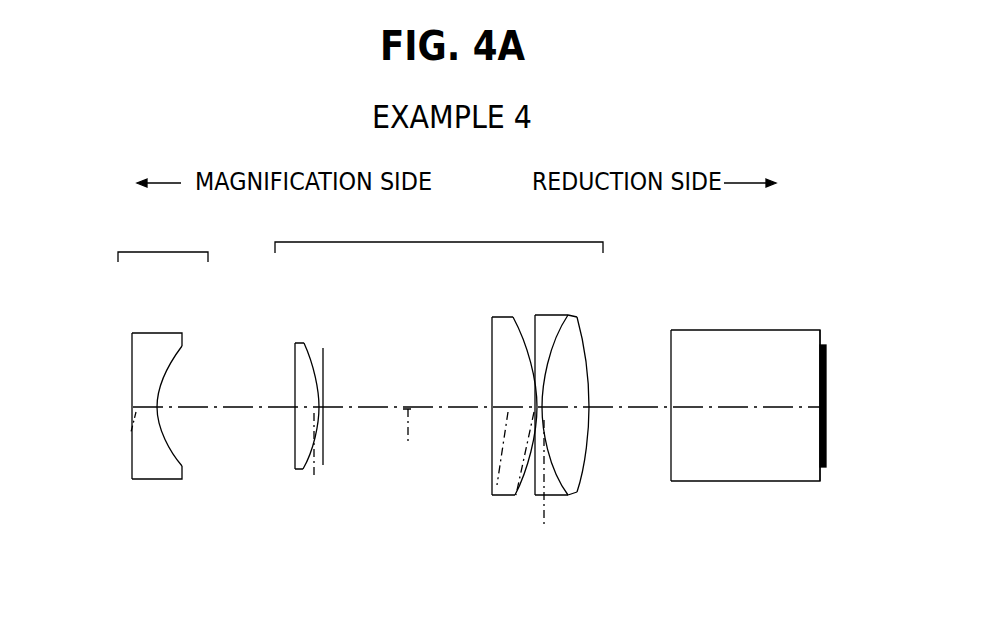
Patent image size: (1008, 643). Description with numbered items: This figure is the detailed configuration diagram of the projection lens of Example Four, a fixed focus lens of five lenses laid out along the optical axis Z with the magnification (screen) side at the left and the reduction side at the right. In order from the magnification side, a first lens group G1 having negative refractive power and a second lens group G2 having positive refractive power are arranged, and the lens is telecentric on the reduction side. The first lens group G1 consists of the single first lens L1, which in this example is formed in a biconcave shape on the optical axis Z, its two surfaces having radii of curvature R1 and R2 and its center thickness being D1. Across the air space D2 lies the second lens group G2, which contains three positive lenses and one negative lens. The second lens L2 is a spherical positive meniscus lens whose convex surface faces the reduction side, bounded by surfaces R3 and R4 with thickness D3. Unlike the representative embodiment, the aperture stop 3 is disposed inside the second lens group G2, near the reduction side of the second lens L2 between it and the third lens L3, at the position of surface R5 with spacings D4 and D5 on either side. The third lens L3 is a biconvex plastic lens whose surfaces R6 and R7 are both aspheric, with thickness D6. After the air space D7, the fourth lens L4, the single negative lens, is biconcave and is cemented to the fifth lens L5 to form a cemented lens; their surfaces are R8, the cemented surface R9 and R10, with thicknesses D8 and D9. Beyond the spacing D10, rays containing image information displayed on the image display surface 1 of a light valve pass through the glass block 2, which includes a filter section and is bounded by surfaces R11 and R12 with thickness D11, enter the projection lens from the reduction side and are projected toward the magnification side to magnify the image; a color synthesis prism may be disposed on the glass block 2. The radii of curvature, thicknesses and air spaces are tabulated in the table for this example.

The image display surface 1 is at (827, 453).
The glass block 2 is at (753, 416).
The aperture stop 3 is at (346, 398).
The optical axis Z is at (410, 445).
The first lens group G1 is at (163, 241).
The second lens group G2 is at (439, 233).
The first lens L1 is at (150, 428).
The second lens L2 is at (278, 420).
The third lens L3 is at (484, 403).
The fourth lens L4 is at (554, 404).
The fifth lens L5 is at (602, 407).
The radius of curvature of first lens surface R1 is at (134, 400).
The radius of curvature of second lens surface R2 is at (158, 407).
The radius of curvature of third lens surface R3 is at (296, 400).
The radius of curvature of fourth lens surface R4 is at (318, 394).
The radius of curvature of fifth surface R5 is at (323, 372).
The radius of curvature of sixth lens surface R6 is at (491, 384).
The radius of curvature of seventh lens surface R7 is at (533, 352).
The radius of curvature of eighth lens surface R8 is at (533, 348).
The radius of curvature of ninth lens surface R9 is at (552, 333).
The radius of curvature of tenth lens surface R10 is at (591, 385).
The radius of curvature of eleventh surface R11 is at (669, 404).
The radius of curvature of twelfth surface R12 is at (822, 340).
The center thickness of first lens D1 is at (124, 425).
The air space between first and second lenses D2 is at (210, 427).
The center thickness of second lens D3 is at (293, 425).
The air space between second lens and aperture stop D4 is at (327, 466).
The air space between aperture stop and third lens D5 is at (367, 424).
The center thickness of third lens D6 is at (497, 436).
The air space between third and fourth lenses D7 is at (520, 472).
The center thickness of fourth lens D8 is at (556, 490).
The center thickness of fifth lens D9 is at (587, 427).
The air space between fifth lens and glass block D10 is at (634, 426).
The center thickness of glass block D11 is at (751, 426).